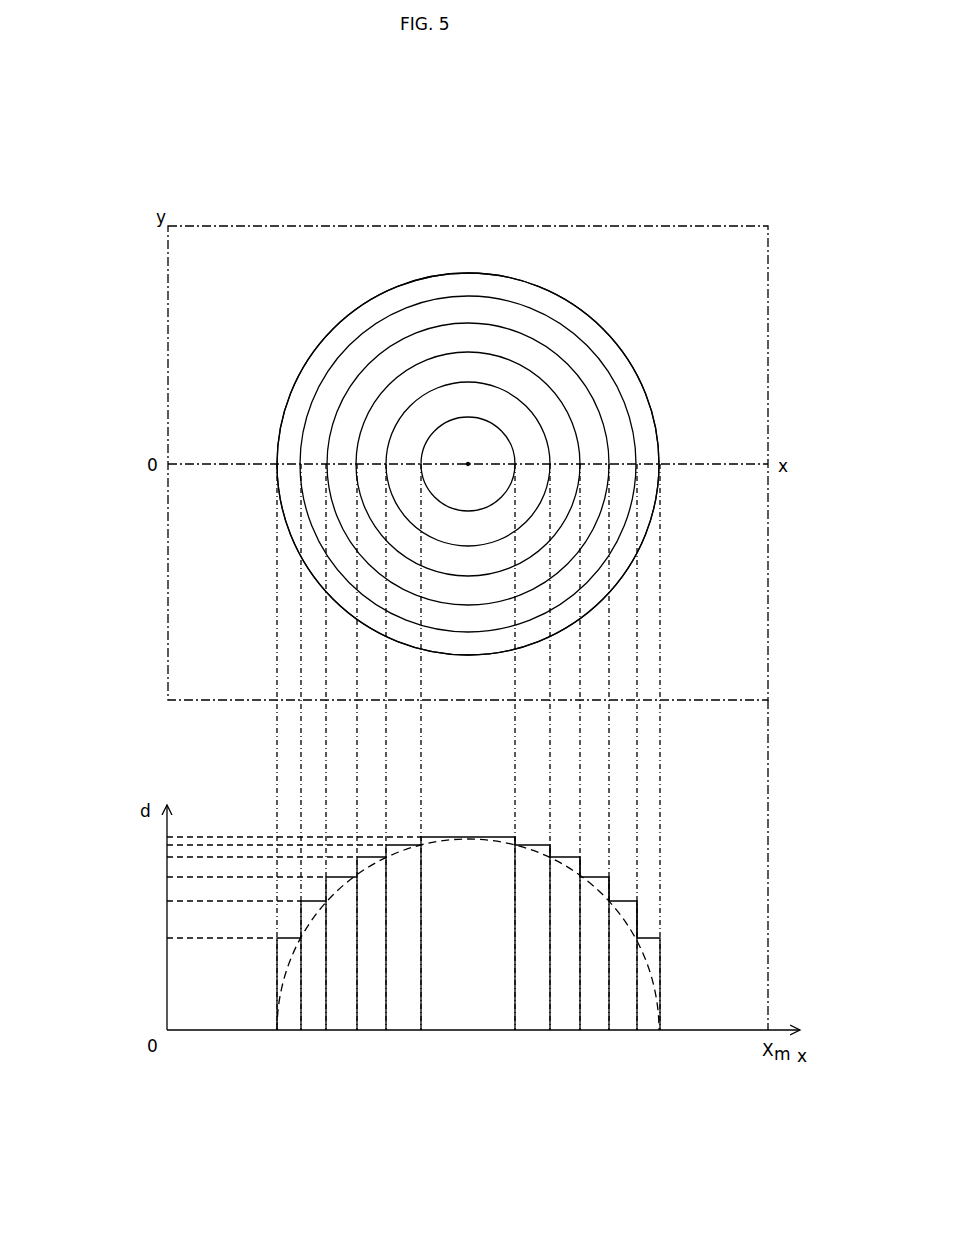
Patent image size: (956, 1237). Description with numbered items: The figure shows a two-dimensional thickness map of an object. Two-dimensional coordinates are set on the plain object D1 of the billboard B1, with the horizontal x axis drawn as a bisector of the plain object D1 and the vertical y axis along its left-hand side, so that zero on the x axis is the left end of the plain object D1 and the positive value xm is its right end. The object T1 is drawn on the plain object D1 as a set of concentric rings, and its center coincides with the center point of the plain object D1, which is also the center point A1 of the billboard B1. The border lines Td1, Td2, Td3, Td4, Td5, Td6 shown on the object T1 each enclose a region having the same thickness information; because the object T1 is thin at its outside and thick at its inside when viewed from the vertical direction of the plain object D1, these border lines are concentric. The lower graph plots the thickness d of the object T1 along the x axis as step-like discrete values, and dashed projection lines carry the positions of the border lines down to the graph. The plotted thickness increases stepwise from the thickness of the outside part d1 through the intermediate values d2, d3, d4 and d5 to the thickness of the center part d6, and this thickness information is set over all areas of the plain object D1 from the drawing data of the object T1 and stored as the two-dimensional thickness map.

The billboard B1 is at (448, 172).
The plain object D1 is at (665, 226).
The object T1 is at (667, 409).
The border line Td1 is at (295, 385).
The border line Td2 is at (335, 358).
The border line Td3 is at (383, 350).
The border line Td4 is at (435, 357).
The border line Td5 is at (500, 387).
The border line Td6 is at (507, 435).
The center point A1 is at (468, 462).
The thickness of the outside part d1 is at (167, 938).
The thickness d2 is at (167, 902).
The thickness d3 is at (167, 877).
The thickness d4 is at (167, 857).
The thickness d5 is at (167, 846).
The thickness of the center part d6 is at (167, 838).